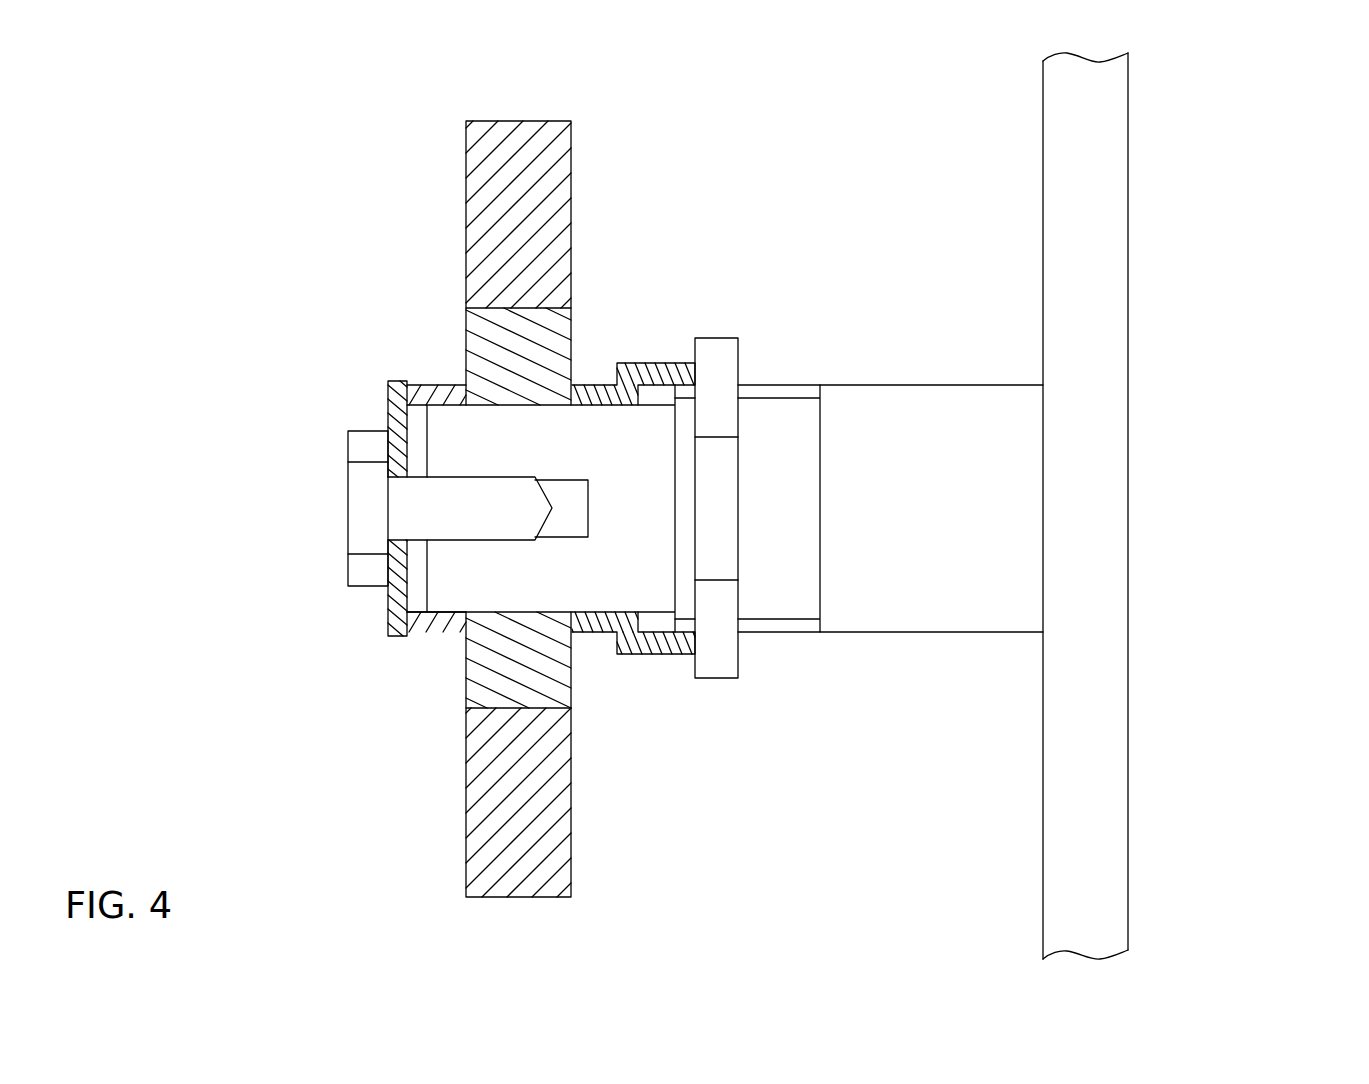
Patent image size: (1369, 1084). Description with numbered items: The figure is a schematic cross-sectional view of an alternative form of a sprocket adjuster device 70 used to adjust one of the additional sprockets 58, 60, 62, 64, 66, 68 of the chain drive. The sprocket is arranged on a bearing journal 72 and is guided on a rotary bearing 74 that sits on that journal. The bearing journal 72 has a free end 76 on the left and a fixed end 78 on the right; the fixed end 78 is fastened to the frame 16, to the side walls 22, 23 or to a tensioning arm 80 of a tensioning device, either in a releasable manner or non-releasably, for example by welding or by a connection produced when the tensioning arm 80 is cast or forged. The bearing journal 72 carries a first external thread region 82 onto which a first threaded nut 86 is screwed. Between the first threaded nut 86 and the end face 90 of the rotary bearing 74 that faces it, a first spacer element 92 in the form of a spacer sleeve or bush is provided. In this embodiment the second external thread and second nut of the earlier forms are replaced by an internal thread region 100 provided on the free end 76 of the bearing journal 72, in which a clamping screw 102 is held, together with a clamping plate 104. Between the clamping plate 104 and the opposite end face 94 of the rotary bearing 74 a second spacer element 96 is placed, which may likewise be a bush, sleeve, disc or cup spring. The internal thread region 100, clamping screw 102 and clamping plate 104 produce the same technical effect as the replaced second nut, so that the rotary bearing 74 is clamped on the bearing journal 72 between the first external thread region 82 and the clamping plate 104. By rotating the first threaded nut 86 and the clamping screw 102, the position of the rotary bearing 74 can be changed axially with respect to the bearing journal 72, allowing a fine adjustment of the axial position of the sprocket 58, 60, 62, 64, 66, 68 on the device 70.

The frame 16 is at (1189, 506).
The side wall 22 is at (1189, 506).
The side wall 23 is at (1189, 506).
The tensioning arm 80 is at (1082, 198).
The sprocket 58 is at (481, 468).
The sprocket 60 is at (481, 468).
The sprocket 62 is at (481, 468).
The sprocket 64 is at (481, 468).
The sprocket 66 is at (481, 468).
The sprocket 68 is at (481, 468).
The sprocket adjuster device 70 is at (297, 187).
The bearing journal 72 is at (636, 575).
The rotary bearing 74 is at (502, 484).
The free end 76 is at (482, 437).
The fixed end 78 is at (1043, 450).
The first external thread region 82 is at (767, 397).
The first threaded nut 86 is at (718, 360).
The end face 90 is at (572, 357).
The first spacer element 92 is at (652, 643).
The end face 94 is at (467, 683).
The second spacer element 96 is at (417, 608).
The internal thread region 100 is at (575, 533).
The clamping screw 102 is at (367, 517).
The clamping plate 104 is at (398, 393).